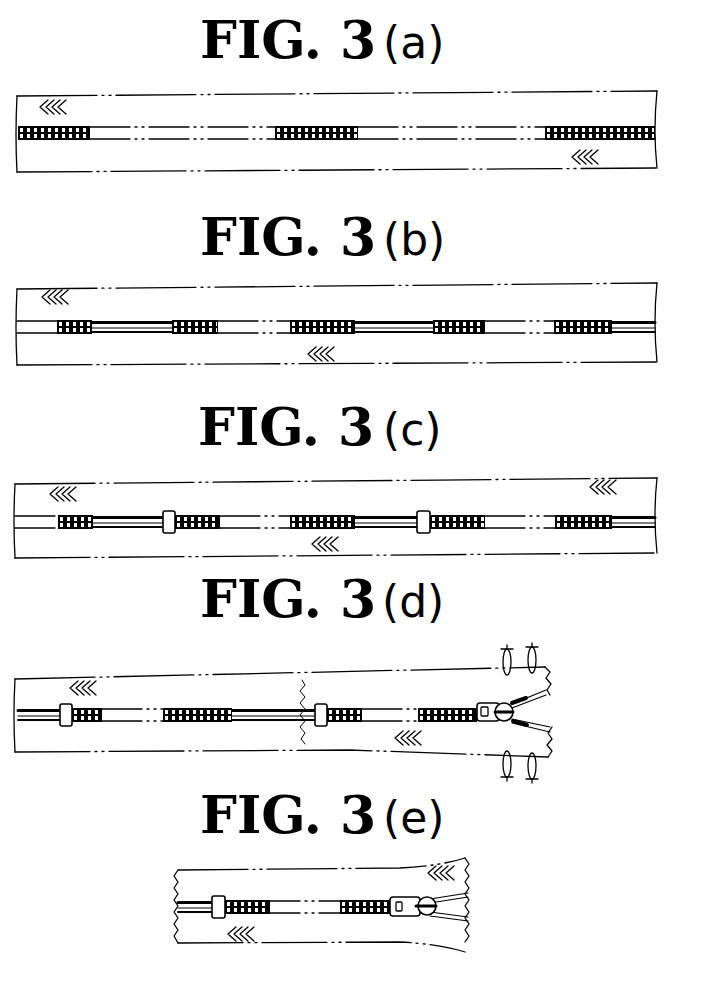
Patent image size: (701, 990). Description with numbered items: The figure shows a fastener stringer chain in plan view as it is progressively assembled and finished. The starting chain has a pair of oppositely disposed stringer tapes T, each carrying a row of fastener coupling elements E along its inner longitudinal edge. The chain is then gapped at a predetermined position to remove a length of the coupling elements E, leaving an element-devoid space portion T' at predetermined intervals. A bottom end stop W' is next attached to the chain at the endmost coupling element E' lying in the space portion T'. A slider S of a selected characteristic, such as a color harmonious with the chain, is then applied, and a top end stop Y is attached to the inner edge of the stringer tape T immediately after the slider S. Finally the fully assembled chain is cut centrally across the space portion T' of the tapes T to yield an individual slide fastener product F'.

In FIG. 3A, the fastener coupling elements E is at (336, 91).
In FIG. 3A, the stringer tape T is at (336, 107).
In FIG. 3B, the element-devoid space portion T' is at (373, 290).
In FIG. 3D, the element-devoid space portion T' is at (166, 675).
In FIG. 3B, the endmost coupling element E' is at (334, 285).
In FIG. 3C, the bottom end stop W' is at (288, 487).
In FIG. 3D, the slider S is at (490, 706).
In FIG. 3D, the top end stop Y is at (526, 716).
In FIG. 3E, the individual slide fastener product F' is at (355, 905).